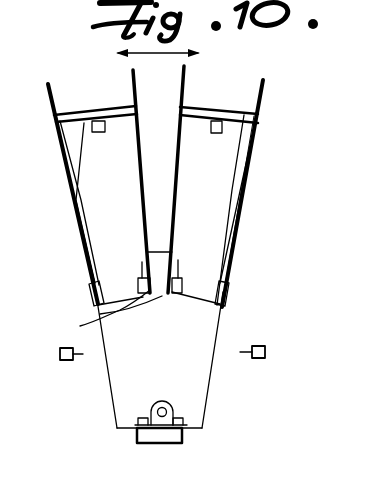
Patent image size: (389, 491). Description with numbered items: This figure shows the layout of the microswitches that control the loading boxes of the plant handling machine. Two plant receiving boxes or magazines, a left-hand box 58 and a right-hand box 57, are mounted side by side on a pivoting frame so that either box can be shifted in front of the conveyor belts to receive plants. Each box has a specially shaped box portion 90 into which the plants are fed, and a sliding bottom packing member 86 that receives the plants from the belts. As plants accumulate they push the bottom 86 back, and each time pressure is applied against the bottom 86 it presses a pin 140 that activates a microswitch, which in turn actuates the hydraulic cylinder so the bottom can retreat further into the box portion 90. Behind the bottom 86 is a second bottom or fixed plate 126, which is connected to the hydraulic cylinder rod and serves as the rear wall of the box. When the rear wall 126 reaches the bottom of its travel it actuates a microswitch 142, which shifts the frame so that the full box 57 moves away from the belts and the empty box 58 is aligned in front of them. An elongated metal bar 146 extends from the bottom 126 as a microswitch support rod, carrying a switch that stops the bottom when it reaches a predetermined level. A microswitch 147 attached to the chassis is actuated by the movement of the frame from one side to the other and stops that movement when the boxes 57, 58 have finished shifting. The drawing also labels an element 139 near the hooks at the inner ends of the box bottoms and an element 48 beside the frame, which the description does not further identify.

The plant receiving box 58 is at (48, 88).
The plant receiving box 57 is at (265, 95).
The bottom packing member 86 is at (105, 112).
The pin 140 is at (218, 120).
The box portion 90 is at (259, 117).
The fixed plate 126 is at (232, 127).
The elongated metal bar 146 is at (84, 268).
The latch hook 139 is at (180, 270).
The microswitch 142 is at (94, 314).
The microswitch 147 is at (65, 360).
The pivot pin 48 is at (262, 358).